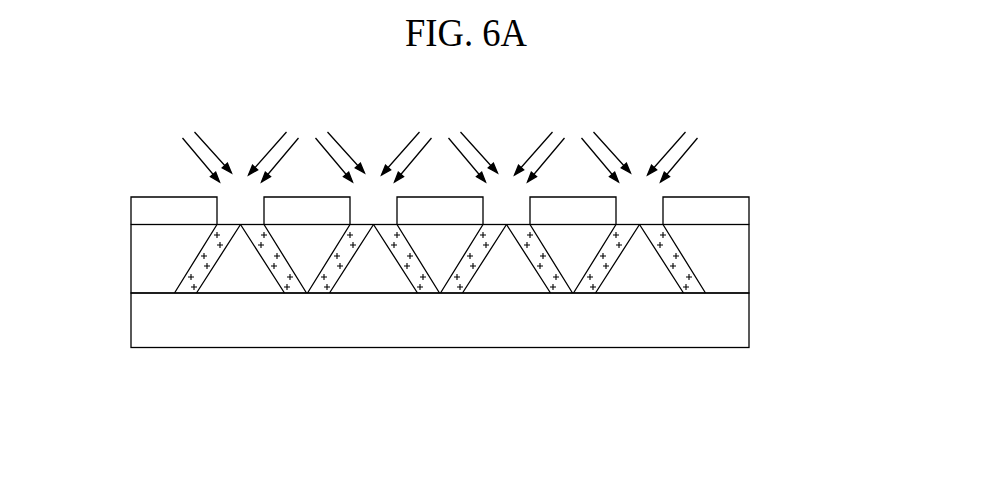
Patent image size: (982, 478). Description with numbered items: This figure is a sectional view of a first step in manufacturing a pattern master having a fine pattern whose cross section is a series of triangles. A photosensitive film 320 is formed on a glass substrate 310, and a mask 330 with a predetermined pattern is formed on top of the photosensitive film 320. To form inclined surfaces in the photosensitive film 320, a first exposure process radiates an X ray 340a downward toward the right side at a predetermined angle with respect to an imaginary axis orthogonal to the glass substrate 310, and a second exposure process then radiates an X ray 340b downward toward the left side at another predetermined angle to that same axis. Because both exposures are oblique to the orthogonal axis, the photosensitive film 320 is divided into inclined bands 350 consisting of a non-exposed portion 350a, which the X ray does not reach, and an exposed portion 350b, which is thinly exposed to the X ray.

The glass substrate 310 is at (740, 328).
The photosensitive film 320 is at (751, 278).
The mask 330 is at (740, 220).
The X ray 340a is at (193, 151).
The X ray 340b is at (688, 151).
The doped region 350 is at (508, 327).
The non-exposed portion 350a is at (648, 287).
The exposed portion 350b is at (588, 288).